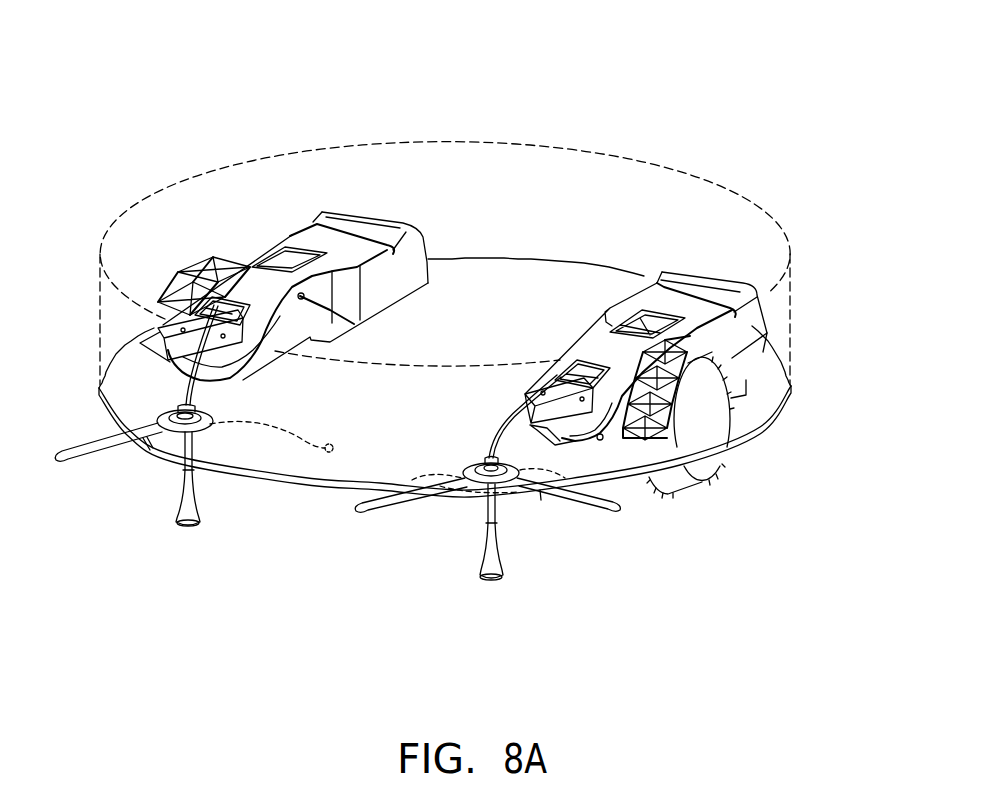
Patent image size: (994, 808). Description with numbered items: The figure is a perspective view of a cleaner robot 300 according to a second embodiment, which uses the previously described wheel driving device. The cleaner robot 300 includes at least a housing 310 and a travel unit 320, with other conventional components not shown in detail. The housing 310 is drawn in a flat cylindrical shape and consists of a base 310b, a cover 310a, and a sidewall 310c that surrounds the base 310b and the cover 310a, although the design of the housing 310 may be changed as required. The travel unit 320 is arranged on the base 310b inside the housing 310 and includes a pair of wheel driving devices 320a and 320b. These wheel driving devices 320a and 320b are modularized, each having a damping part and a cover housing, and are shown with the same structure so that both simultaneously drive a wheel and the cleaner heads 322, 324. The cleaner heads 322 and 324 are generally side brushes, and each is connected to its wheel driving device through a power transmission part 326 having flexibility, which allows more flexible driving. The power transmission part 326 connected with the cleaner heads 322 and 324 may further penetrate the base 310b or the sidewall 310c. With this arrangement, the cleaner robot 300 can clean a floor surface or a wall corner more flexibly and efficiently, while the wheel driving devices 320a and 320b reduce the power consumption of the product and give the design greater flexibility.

The cleaner robot 300 is at (864, 623).
The housing 310 is at (868, 223).
The cover 310a is at (792, 237).
The base 310b is at (770, 380).
The sidewall 310c is at (773, 305).
The travel unit 320 is at (716, 42).
The wheel driving device 320a is at (344, 202).
The wheel driving device 320b is at (659, 263).
The cleaner head 322 is at (503, 488).
The cleaner head 324 is at (197, 503).
The power transmission part 326 is at (187, 403).